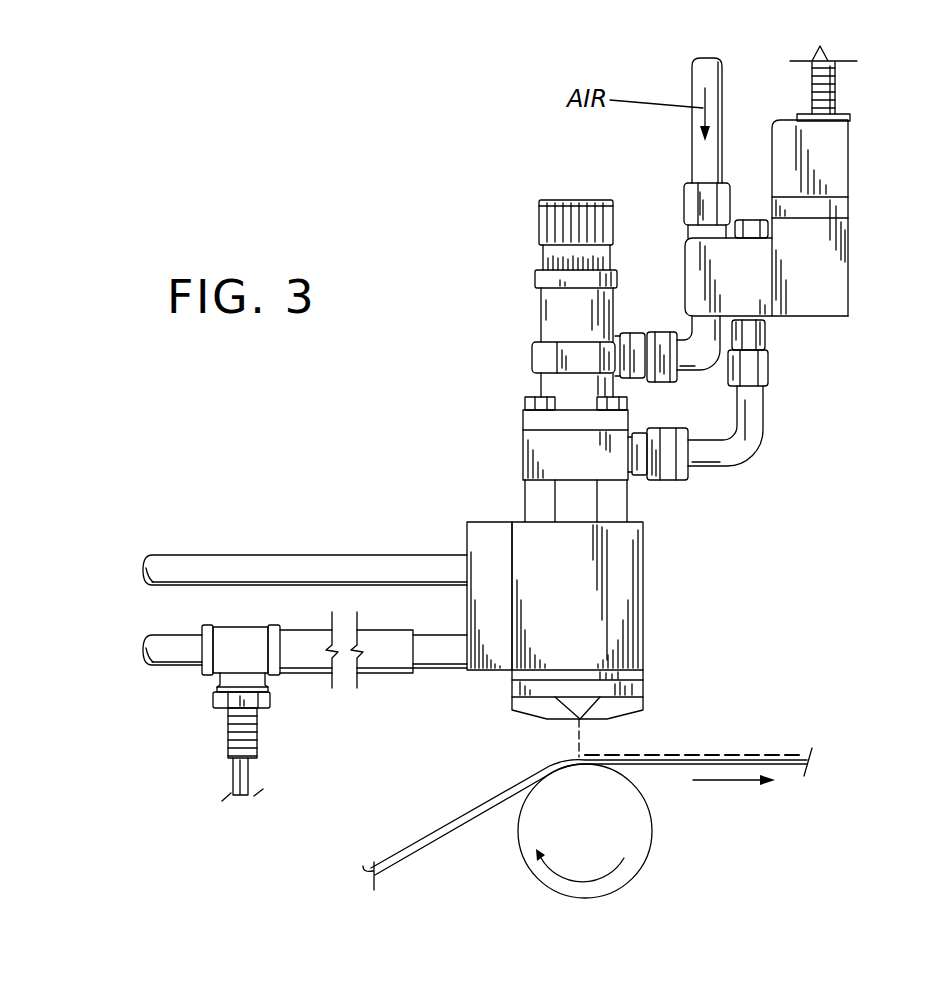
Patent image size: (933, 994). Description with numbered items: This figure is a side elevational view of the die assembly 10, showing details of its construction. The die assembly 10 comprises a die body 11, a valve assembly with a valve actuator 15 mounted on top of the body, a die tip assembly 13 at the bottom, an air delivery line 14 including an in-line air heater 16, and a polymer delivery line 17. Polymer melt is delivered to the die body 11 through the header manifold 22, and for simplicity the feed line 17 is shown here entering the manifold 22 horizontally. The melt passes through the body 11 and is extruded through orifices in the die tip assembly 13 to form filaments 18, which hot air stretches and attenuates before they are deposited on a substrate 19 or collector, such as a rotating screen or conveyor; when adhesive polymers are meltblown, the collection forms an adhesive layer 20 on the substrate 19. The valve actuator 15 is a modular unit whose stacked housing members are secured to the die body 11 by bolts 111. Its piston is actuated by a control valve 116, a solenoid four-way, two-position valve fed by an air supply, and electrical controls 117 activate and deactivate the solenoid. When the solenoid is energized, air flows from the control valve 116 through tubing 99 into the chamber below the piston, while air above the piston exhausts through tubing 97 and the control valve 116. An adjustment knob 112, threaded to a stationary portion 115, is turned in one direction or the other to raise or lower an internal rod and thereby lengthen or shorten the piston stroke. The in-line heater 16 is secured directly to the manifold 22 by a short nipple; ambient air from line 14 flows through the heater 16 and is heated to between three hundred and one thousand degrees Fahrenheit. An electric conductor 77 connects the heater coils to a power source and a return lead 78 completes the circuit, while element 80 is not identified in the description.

The die assembly 10 is at (658, 585).
The die body 11 is at (550, 549).
The die tip assembly 13 is at (658, 688).
The air delivery line 14 is at (185, 655).
The valve actuator 15 is at (520, 356).
The in-line air heater 16 is at (388, 660).
The polymer delivery line 17 is at (247, 562).
The filaments 18 is at (573, 737).
The substrate 19 is at (782, 766).
The adhesive layer 20 is at (782, 752).
The header manifold 22 is at (486, 543).
The electric conductor 77 is at (232, 785).
The return lead 78 is at (248, 773).
The tube 80 is at (447, 655).
The tubing 97 is at (700, 357).
The tubing 99 is at (742, 441).
The bolts 111 is at (525, 404).
The adjustment knob 112 is at (543, 203).
The stationary portion 115 is at (553, 313).
The control valve 116 is at (752, 298).
The electrical controls 117 is at (827, 168).